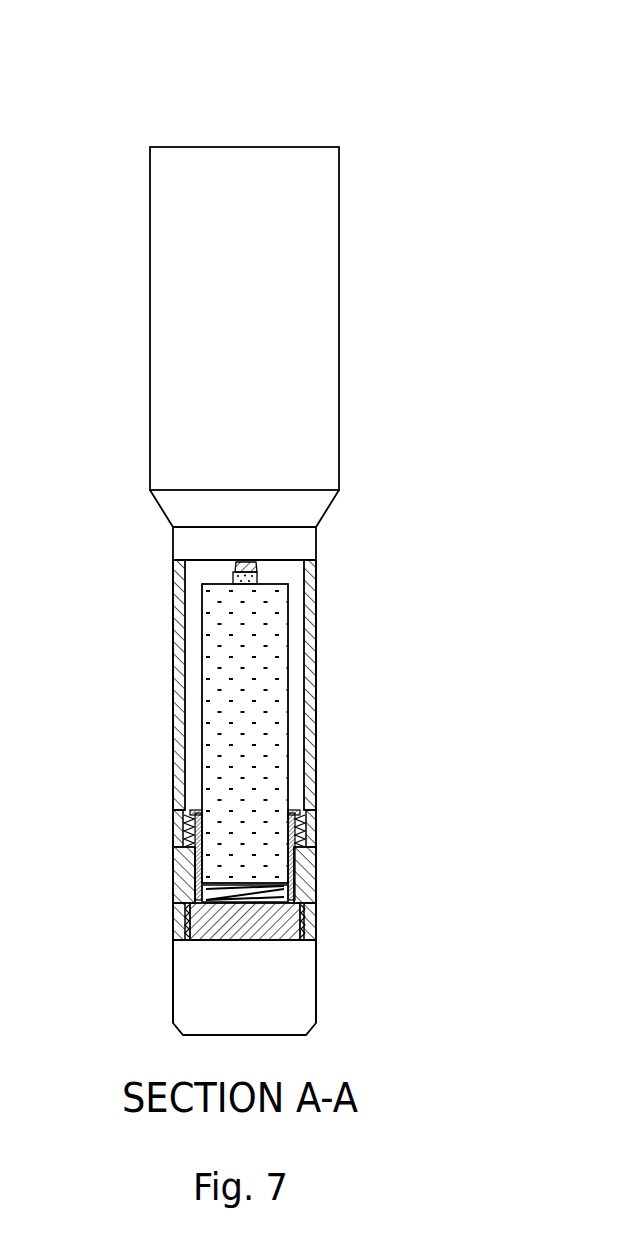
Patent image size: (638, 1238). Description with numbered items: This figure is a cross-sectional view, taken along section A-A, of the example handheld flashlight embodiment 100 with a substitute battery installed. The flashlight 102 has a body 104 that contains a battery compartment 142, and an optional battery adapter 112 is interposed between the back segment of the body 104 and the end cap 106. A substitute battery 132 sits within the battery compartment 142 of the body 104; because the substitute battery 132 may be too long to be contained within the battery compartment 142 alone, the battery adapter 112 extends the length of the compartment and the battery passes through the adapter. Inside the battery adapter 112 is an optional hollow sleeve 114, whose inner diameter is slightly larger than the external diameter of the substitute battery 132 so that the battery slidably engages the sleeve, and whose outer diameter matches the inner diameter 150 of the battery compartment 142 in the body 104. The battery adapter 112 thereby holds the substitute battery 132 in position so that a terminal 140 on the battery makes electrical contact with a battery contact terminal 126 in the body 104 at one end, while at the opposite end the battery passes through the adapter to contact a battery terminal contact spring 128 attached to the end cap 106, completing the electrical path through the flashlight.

The example embodiment 100 is at (218, 68).
The flashlight 102 is at (150, 263).
The body 104 is at (173, 665).
The end cap 106 is at (173, 968).
The battery adapter 112 is at (173, 887).
The hollow sleeve 114 is at (196, 810).
The battery contact terminal 126 is at (235, 566).
The battery terminal contact spring 128 is at (293, 900).
The substitute battery 132 is at (268, 730).
The terminal 140 is at (258, 580).
The battery compartment 142 is at (200, 568).
The inner diameter 150 is at (185, 744).